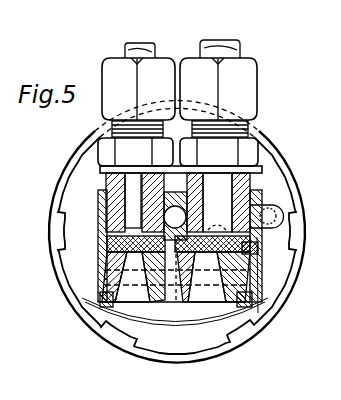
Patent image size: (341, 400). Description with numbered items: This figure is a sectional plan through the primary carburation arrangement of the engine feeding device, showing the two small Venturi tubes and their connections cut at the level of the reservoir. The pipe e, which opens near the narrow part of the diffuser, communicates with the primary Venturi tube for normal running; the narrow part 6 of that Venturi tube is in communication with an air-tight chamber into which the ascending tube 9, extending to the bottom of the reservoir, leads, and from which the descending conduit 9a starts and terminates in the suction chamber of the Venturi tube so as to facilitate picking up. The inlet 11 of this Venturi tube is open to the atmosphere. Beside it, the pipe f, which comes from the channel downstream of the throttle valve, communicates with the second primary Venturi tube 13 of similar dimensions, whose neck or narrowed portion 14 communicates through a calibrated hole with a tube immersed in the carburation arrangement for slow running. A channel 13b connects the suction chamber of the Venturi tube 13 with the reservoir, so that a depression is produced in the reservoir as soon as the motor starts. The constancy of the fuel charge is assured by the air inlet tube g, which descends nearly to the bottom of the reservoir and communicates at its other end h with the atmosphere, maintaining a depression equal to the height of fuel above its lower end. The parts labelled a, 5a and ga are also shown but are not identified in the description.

The pipe f is at (143, 55).
The pipe e is at (233, 52).
The tube 9 is at (220, 202).
The housing wall 5a is at (262, 192).
The end of tube g h is at (285, 216).
The narrow part 6 is at (175, 206).
The descending conduit 9a is at (292, 304).
The inlet 11 is at (207, 237).
The tube g is at (186, 304).
The plate web ga is at (207, 232).
The channel 13b is at (116, 300).
The neck 14 is at (117, 250).
The second primary Venturi tube 13 is at (118, 240).
The housing body a is at (103, 215).